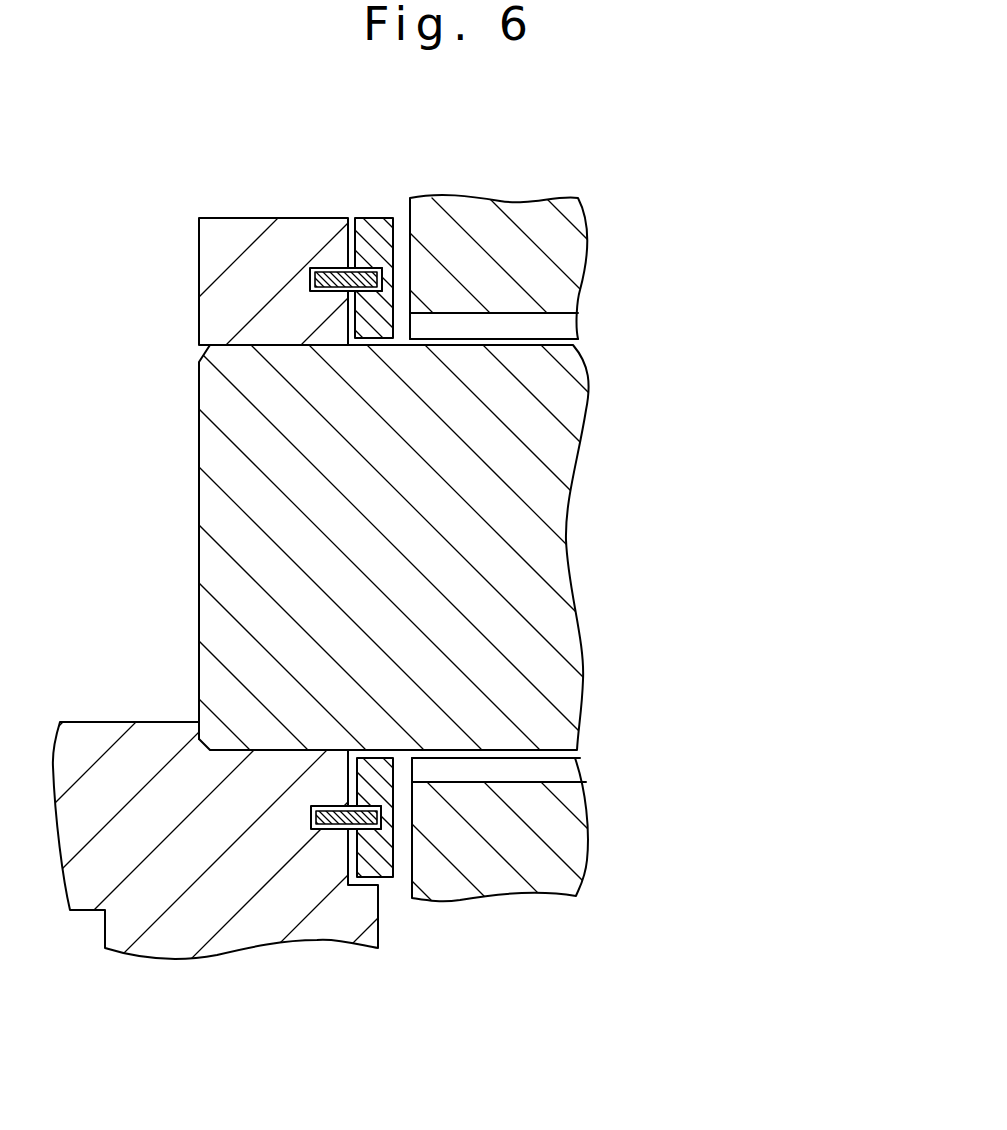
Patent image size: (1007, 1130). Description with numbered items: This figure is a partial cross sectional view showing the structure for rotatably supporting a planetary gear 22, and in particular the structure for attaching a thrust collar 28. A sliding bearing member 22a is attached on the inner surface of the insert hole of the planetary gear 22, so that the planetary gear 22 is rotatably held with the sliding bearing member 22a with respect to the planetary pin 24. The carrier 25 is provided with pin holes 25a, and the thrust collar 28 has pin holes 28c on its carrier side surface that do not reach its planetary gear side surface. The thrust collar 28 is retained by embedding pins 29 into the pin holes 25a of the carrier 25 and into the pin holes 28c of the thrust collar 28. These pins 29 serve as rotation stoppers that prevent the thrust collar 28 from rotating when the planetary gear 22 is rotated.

The planetary gear 22 is at (580, 228).
The sliding bearing member 22a is at (567, 327).
The planetary pin 24 is at (208, 518).
The carrier 25 is at (208, 317).
The pin hole 25a is at (310, 279).
The thrust collar 28 is at (368, 230).
The pin hole 28c is at (382, 275).
The pin 29 is at (340, 268).